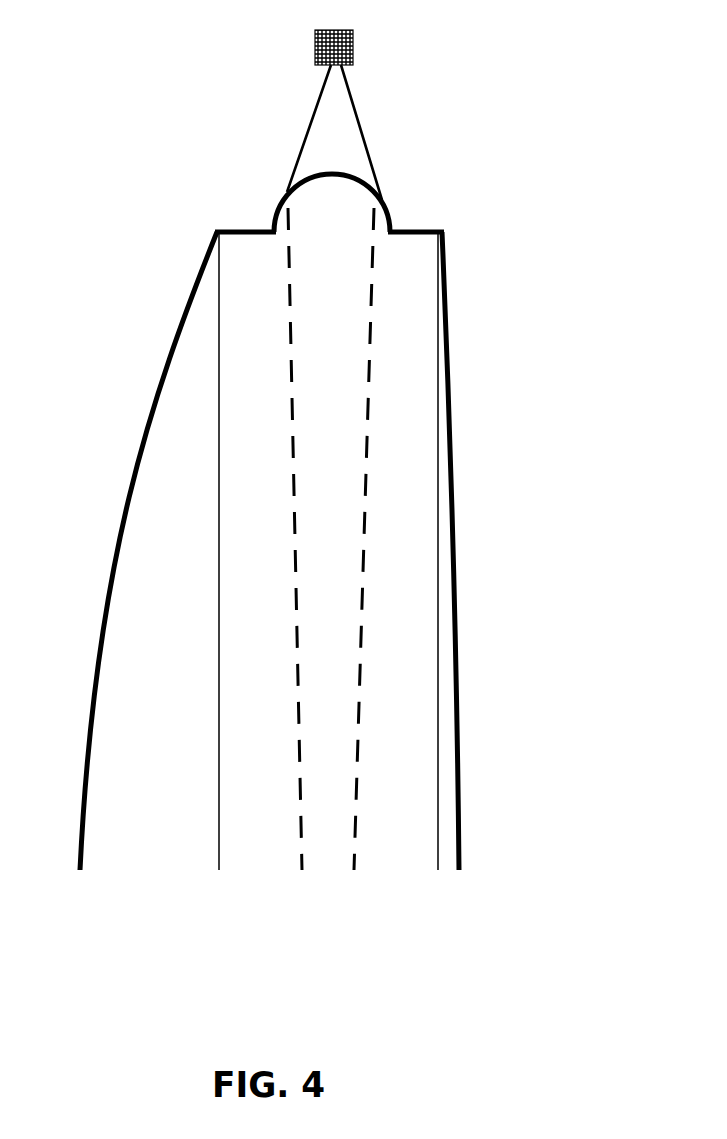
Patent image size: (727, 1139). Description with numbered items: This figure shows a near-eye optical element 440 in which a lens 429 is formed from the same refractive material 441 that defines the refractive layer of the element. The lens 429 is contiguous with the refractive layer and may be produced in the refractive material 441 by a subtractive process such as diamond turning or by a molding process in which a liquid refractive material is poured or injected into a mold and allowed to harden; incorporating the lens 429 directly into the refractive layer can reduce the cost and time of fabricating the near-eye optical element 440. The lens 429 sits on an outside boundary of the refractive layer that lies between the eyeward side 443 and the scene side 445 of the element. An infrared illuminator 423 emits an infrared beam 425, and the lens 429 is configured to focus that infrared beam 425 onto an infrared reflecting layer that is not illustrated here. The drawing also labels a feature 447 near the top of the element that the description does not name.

The infrared illuminator 423 is at (353, 50).
The infrared beam 425 is at (305, 128).
The lens 429 is at (382, 200).
The near-eye optical element 440 is at (443, 230).
The refractive material 441 is at (178, 745).
The eyeward side 443 is at (167, 365).
The scene side 445 is at (460, 573).
The top surface shoulder 447 is at (245, 227).